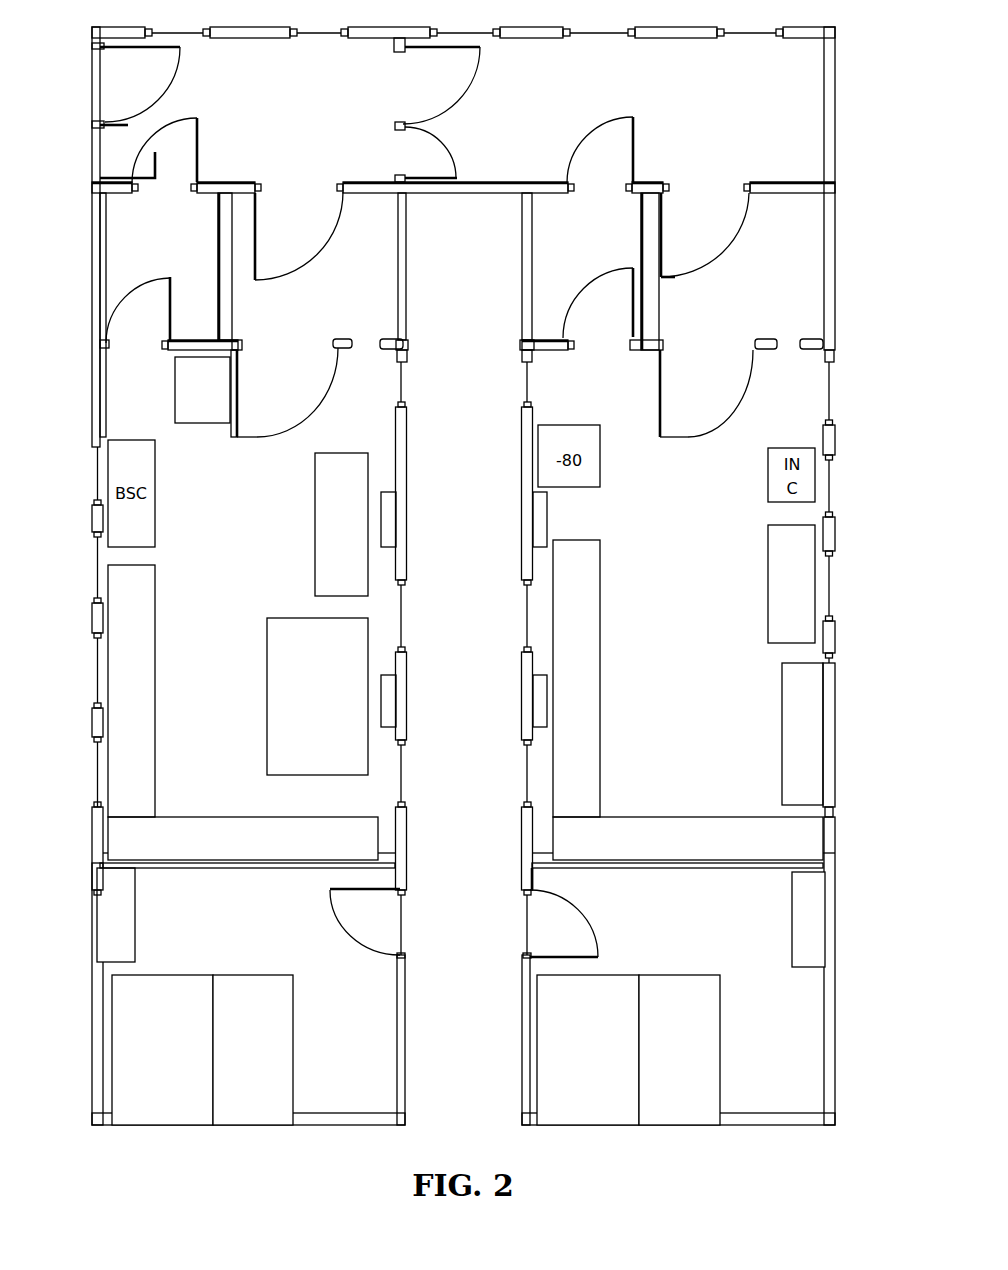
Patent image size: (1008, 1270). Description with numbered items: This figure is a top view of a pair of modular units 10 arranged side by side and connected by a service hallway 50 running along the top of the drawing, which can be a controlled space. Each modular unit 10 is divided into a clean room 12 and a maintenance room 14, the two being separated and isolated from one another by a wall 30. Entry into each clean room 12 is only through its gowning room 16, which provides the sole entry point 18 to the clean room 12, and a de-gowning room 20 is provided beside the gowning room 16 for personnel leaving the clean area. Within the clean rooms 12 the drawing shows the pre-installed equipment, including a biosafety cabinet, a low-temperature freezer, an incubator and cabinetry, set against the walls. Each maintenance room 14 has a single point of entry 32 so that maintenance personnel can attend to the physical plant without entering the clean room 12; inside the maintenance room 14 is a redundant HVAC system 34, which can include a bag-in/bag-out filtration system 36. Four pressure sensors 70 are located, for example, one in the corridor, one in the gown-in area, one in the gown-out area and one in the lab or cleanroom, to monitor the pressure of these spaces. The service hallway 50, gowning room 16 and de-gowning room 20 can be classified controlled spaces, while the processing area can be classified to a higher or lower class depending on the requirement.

The modular unit 10 is at (74, 511).
The clean room 12 is at (850, 575).
The maintenance room 14 is at (665, 940).
The gowning room 16 is at (323, 318).
The sole entry point 18 is at (710, 193).
The de-gowning room 20 is at (140, 245).
The wall 30 is at (845, 867).
The single point of entry 32 is at (408, 912).
The redundant HVAC system 34 is at (149, 1067).
The bag-in/bag-out filtration system 36 is at (240, 1067).
The service hallway 50 is at (703, 111).
The pressure sensors 70 is at (392, 105).